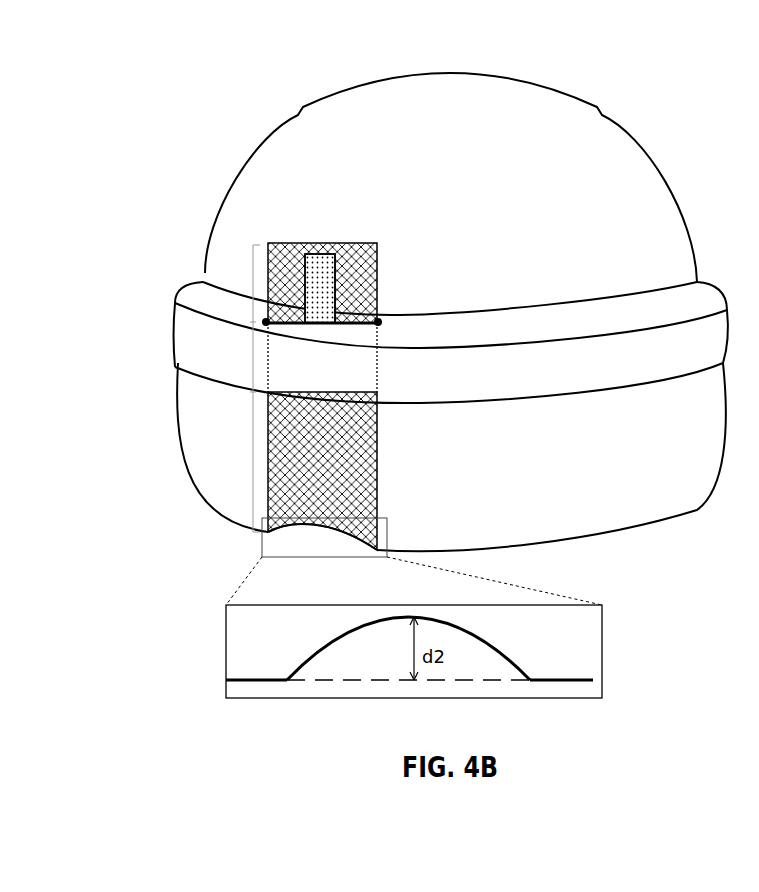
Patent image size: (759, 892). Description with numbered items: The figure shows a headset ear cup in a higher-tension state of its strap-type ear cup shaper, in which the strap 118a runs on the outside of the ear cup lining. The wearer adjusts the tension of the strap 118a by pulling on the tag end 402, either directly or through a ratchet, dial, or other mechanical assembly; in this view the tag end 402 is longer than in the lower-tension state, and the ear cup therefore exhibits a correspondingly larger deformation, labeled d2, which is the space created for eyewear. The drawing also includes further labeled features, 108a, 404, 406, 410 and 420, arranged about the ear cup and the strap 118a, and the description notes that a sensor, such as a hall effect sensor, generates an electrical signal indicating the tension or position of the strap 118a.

The housing body 108a is at (178, 411).
The tag end 402 is at (312, 256).
The second layer 404 is at (251, 359).
The third layer 406 is at (251, 465).
The seal 410 is at (378, 320).
The hatched material 420 is at (337, 252).
The strap 118a is at (328, 234).